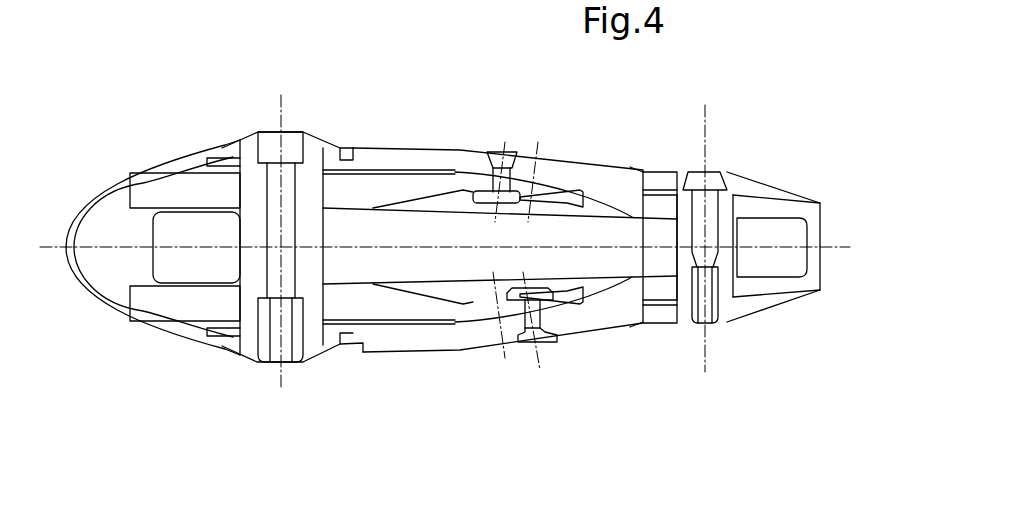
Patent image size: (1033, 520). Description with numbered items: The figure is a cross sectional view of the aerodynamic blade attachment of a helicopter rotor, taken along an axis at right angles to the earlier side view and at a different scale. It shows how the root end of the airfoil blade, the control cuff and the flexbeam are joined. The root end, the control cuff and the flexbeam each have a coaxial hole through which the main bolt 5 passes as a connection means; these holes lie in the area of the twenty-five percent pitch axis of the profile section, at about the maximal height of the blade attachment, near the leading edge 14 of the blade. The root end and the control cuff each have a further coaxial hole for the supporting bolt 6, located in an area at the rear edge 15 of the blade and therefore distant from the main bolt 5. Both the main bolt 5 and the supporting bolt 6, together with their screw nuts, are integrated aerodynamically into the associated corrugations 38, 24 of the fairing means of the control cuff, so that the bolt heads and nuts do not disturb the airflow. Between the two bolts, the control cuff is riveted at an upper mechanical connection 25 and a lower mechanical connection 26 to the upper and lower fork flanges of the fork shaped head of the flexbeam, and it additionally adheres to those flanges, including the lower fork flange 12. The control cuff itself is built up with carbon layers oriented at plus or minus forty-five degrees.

The main bolt 5 is at (273, 168).
The supporting bolt 6 is at (713, 200).
The lower fork flange 12 is at (160, 314).
The leading edge 14 is at (170, 233).
The rear edge 15 is at (807, 237).
The corrugation 24 is at (663, 167).
The upper mechanical connection 25 is at (502, 158).
The lower mechanical connection 26 is at (537, 347).
The corrugation 38 is at (348, 153).